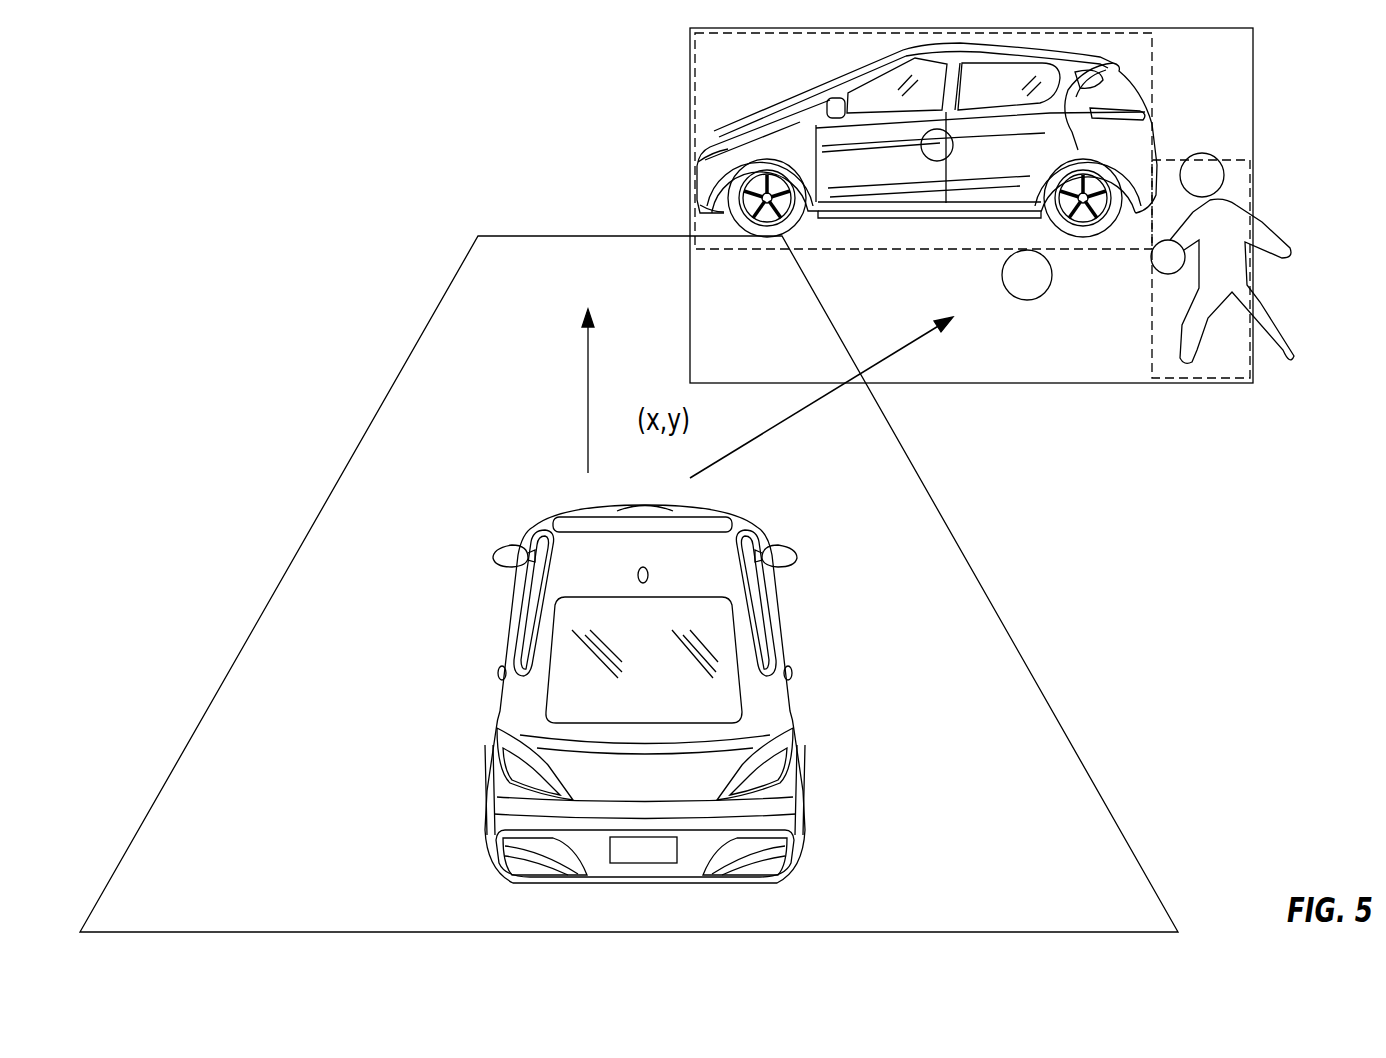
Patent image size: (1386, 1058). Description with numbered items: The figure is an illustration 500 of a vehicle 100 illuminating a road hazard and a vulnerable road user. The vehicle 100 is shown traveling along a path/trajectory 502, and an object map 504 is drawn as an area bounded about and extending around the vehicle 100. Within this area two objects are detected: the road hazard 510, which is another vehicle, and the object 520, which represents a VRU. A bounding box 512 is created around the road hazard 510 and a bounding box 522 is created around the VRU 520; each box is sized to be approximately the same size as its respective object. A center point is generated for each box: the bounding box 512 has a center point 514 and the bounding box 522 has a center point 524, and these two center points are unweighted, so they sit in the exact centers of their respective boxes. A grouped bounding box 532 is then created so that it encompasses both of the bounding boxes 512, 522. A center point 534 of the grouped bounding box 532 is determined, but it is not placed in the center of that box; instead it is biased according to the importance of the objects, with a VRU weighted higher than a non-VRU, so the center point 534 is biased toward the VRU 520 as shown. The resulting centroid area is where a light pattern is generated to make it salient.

The illustration 500 is at (129, 69).
The vehicle 100 is at (535, 522).
The path/trajectory 502 is at (588, 405).
The object map 504 is at (407, 355).
The road hazard 510 is at (790, 105).
The bounding box 512 is at (1154, 90).
The center point 514 is at (942, 129).
The VRU 520 is at (1280, 235).
The bounding box 522 is at (1168, 160).
The center point 524 is at (1161, 271).
The grouped bounding box 532 is at (1027, 385).
The center point 534 is at (1022, 300).